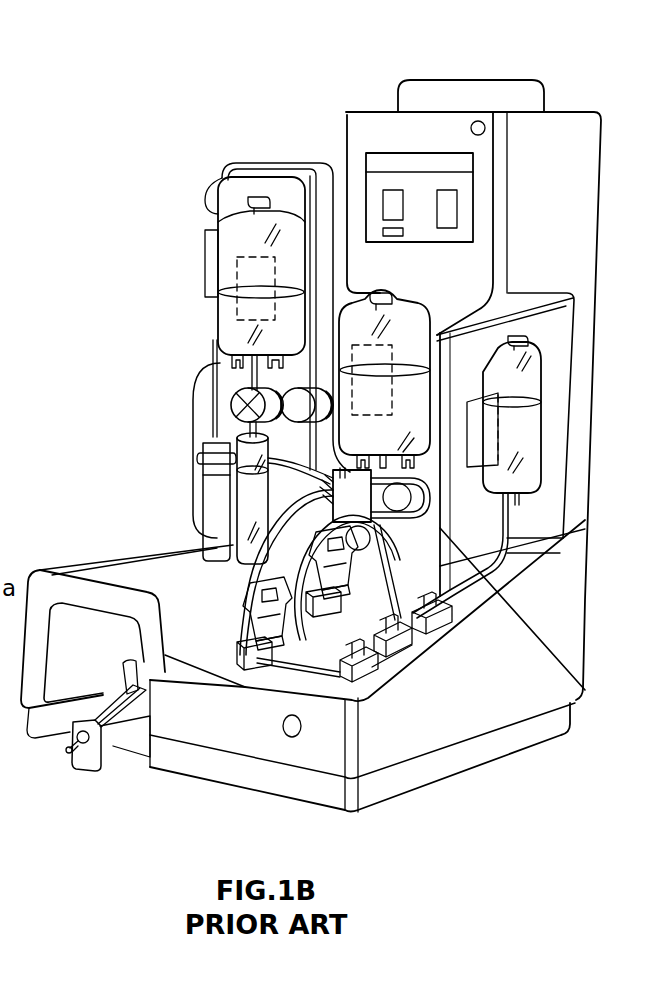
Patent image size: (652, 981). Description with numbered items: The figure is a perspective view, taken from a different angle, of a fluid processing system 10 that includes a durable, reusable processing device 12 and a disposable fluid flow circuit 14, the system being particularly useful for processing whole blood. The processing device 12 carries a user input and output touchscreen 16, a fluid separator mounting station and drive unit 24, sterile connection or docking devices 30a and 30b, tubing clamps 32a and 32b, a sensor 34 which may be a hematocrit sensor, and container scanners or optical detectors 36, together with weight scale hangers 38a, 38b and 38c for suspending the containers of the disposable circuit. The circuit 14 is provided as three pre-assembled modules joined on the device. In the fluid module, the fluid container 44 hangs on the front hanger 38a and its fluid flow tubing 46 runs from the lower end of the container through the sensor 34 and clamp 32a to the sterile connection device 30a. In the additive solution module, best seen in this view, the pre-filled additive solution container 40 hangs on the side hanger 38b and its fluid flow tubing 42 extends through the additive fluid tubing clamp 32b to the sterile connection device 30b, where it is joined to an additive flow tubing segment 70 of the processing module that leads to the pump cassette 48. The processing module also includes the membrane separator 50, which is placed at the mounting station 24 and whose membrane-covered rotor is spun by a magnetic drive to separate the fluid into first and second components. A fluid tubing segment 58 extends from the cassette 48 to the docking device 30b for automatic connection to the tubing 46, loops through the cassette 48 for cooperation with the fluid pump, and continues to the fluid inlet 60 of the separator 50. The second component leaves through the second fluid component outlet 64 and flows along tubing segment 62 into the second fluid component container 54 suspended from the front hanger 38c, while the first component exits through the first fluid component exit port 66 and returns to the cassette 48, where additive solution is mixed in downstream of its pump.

The fluid processing system 10 is at (562, 84).
The processing device 12 is at (574, 160).
The disposable fluid flow circuit 14 is at (225, 582).
The user input and output touchscreen 16 is at (419, 183).
The fluid separator mounting station and drive unit 24 is at (210, 468).
The sterile connection device 30a is at (255, 667).
The sterile connection device 30b is at (312, 625).
The tubing clamp 32a is at (378, 668).
The additive fluid tubing clamp 32b is at (400, 625).
The sensor 34 is at (415, 655).
The container scanners or optical detectors 36 is at (228, 268).
The weight scale hanger 38a is at (373, 290).
The weight scale hanger 38b is at (522, 343).
The weight scale hanger 38c is at (250, 201).
The additive solution container 40 is at (528, 420).
The fluid flow tubing 42 is at (356, 498).
The fluid container 44 is at (348, 322).
The fluid flow tubing 46 is at (435, 585).
The pump cassette 48 is at (485, 560).
The membrane separator 50 is at (244, 458).
The second fluid component container 54 is at (278, 232).
The fluid tubing segment 58 is at (300, 600).
The fluid inlet 60 is at (257, 530).
The tubing segment 62 is at (253, 380).
The second fluid component outlet 64 is at (238, 437).
The first fluid component exit port 66 is at (240, 388).
The additive flow tubing segment 70 is at (150, 705).